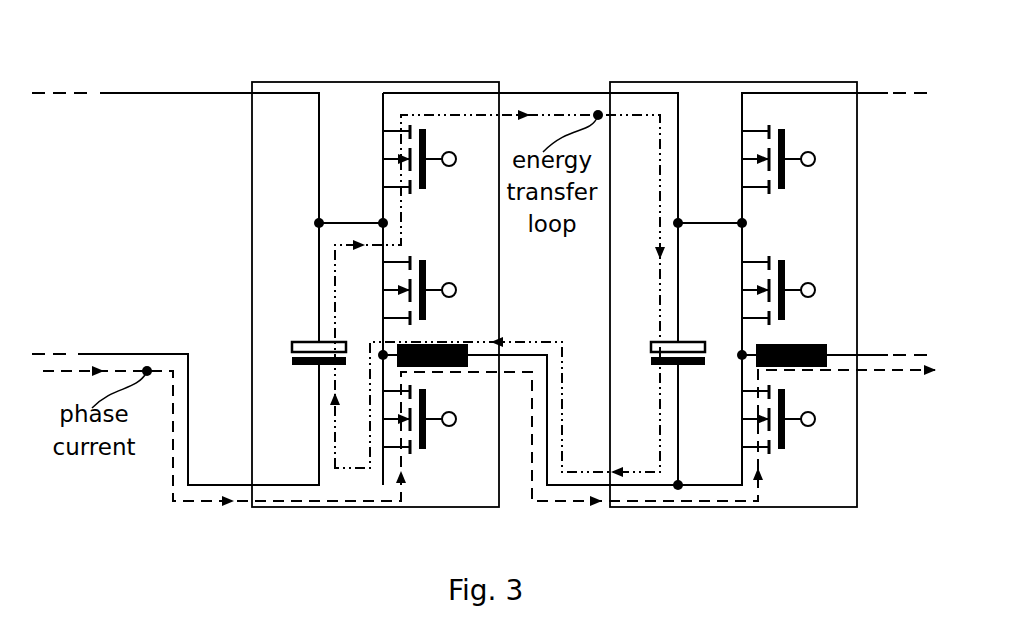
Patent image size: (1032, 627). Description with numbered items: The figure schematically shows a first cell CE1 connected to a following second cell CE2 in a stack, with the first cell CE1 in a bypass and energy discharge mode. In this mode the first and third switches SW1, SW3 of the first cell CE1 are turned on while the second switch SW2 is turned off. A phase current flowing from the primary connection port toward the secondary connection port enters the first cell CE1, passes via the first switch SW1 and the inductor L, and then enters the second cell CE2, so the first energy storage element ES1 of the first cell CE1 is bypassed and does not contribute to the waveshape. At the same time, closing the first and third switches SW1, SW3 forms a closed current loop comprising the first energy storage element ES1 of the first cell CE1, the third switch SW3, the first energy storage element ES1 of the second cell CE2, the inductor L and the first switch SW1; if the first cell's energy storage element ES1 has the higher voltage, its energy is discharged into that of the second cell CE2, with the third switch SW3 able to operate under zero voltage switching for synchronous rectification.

The first cell CE1 is at (375, 273).
The second cell CE2 is at (733, 273).
The first energy storage element ES1 is at (481, 335).
The first switch SW1 is at (436, 424).
The second switch SW2 is at (442, 294).
The third switch SW3 is at (436, 164).
The inductor L is at (530, 414).